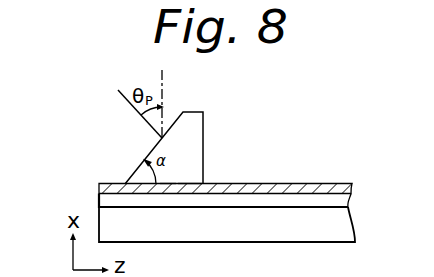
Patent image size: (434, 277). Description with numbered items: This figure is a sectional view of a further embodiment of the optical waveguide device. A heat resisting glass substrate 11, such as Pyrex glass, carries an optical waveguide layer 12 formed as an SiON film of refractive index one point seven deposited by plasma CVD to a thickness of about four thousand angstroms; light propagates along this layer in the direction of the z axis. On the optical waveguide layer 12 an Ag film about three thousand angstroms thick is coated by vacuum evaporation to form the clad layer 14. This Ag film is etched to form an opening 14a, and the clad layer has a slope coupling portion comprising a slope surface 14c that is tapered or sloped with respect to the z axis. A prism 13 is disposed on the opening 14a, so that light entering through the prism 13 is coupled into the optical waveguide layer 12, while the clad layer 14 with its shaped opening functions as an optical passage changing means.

The heat resisting glass substrate 11 is at (343, 228).
The optical waveguide layer 12 is at (340, 203).
The prism 13 is at (193, 115).
The clad layer 14 is at (303, 183).
The opening 14a is at (168, 184).
The slope surface 14c is at (185, 183).